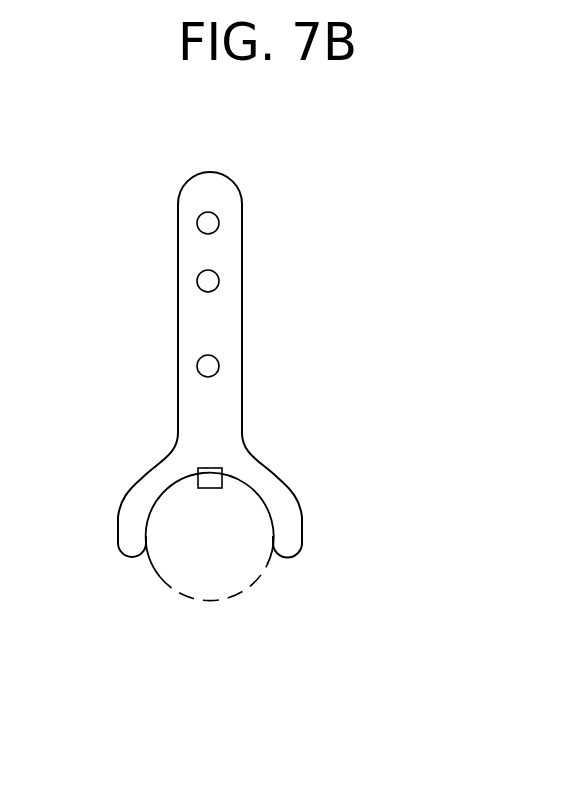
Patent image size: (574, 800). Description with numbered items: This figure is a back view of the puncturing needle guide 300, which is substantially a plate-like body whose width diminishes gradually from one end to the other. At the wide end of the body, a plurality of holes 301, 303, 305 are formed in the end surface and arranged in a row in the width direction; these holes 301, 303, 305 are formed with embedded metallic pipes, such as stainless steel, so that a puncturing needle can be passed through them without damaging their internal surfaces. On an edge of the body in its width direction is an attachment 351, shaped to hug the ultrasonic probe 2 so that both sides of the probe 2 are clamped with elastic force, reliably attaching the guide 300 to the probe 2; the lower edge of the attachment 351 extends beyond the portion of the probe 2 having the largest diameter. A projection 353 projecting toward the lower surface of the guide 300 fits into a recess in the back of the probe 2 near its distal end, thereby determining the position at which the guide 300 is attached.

The puncturing needle guide 300 is at (320, 133).
The hole 301 is at (219, 223).
The hole 303 is at (219, 281).
The hole 305 is at (219, 366).
The attachment 351 is at (297, 500).
The projection 353 is at (208, 488).
The ultrasonic probe 2 is at (197, 602).